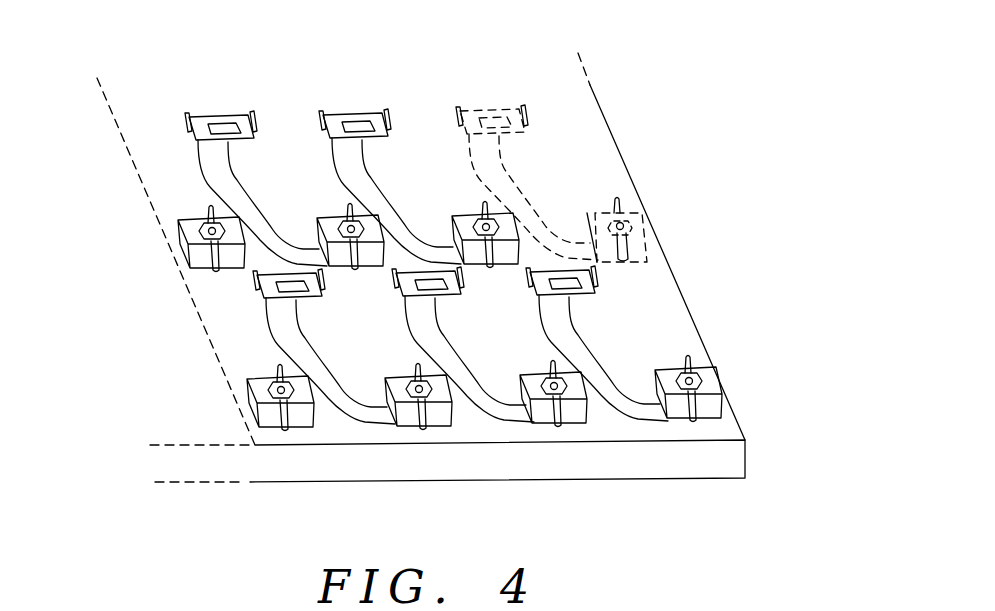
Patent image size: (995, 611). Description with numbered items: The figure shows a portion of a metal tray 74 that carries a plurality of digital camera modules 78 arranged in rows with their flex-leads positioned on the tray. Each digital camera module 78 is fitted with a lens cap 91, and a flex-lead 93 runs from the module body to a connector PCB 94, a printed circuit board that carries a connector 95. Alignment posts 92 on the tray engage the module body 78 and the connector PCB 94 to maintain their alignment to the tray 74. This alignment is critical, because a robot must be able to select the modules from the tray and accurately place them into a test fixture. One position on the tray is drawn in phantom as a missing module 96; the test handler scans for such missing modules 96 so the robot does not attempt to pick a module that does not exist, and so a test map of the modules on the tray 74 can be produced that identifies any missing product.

The tray 74 is at (683, 293).
The digital camera module 78 is at (470, 427).
The lens cap 91 is at (400, 424).
The alignment post 92 is at (386, 112).
The flex-lead 93 is at (351, 424).
The connector PCB 94 is at (290, 284).
The connector 95 is at (262, 298).
The missing module 96 is at (510, 182).